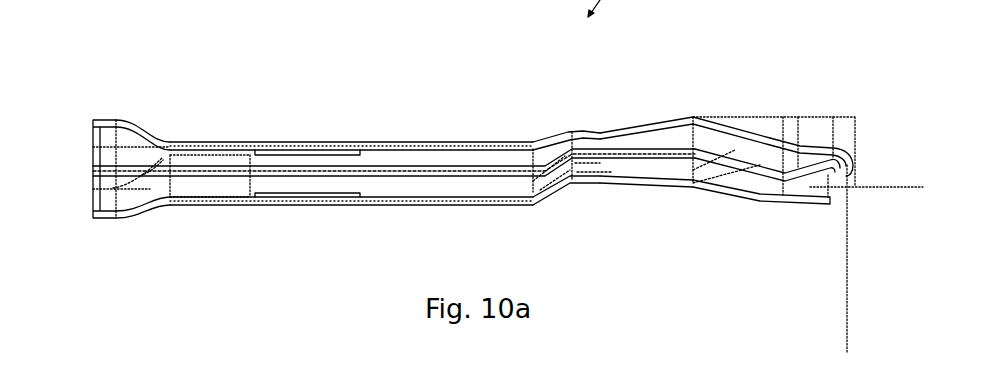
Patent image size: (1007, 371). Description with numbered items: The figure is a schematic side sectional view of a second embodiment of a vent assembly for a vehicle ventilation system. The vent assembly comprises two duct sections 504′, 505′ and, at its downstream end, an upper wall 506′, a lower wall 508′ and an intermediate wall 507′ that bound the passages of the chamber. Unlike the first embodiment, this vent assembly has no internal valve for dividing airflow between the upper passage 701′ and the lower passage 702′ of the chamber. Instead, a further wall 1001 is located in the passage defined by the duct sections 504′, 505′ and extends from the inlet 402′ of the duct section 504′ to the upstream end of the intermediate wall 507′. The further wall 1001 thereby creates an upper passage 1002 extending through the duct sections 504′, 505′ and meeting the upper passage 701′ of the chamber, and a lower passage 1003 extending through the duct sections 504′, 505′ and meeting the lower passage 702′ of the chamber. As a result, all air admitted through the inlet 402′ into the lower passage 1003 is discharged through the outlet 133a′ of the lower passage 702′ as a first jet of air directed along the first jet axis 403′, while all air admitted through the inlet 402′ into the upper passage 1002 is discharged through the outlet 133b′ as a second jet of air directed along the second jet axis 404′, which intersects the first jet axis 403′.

The inlet 402′ is at (88, 167).
The duct section 504′ is at (231, 144).
The duct section 505′ is at (464, 148).
The further wall 1001 is at (464, 177).
The upper passage 1002 is at (336, 158).
The lower passage 1003 is at (333, 192).
The upper passage 701′ is at (684, 140).
The lower passage 702′ is at (681, 173).
The upper wall 506′ is at (737, 135).
The intermediate wall 507′ is at (773, 155).
The lower wall 508′ is at (755, 201).
The outlet 133a′ is at (836, 206).
The outlet 133b′ is at (856, 172).
The first jet axis 403′ is at (893, 189).
The second jet axis 404′ is at (848, 353).